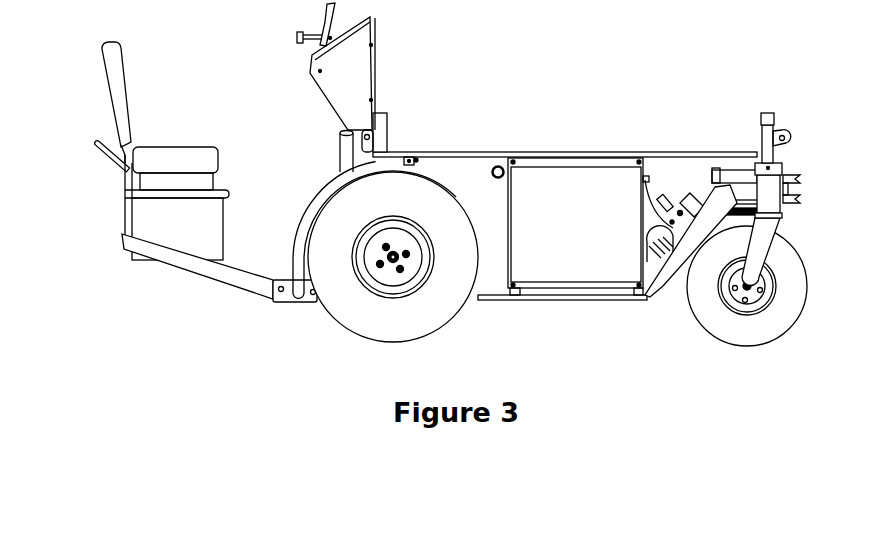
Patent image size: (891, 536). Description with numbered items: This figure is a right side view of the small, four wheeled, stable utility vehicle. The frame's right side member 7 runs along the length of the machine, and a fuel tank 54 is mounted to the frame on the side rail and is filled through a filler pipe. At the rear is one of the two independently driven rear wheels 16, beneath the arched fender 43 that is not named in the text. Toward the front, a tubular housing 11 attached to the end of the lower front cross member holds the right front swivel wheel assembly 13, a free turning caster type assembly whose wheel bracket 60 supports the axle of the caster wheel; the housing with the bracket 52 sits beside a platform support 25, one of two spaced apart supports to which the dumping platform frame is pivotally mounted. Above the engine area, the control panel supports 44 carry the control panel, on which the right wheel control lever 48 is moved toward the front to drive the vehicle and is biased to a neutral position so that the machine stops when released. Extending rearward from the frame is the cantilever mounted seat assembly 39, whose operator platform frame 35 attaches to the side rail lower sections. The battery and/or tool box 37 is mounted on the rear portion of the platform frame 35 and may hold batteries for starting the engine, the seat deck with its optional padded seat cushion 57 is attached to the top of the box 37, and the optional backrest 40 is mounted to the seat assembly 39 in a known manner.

The right side member 7 is at (662, 296).
The tubular housing 11 is at (768, 208).
The right front swivel wheel assembly 13 is at (810, 285).
The rear wheel 16 is at (368, 328).
The platform support 25 is at (776, 120).
The operator platform frame 35 is at (163, 252).
The battery and/or tool box 37 is at (163, 215).
The seat assembly 39 is at (205, 140).
The backrest 40 is at (112, 69).
The wheel fender arch 43 is at (325, 189).
The control panel support 44 is at (350, 77).
The right wheel control lever 48 is at (337, 12).
The mounting bracket 52 is at (800, 179).
The fuel tank 54 is at (589, 237).
The padded seat cushion 57 is at (178, 162).
The wheel bracket 60 is at (767, 235).